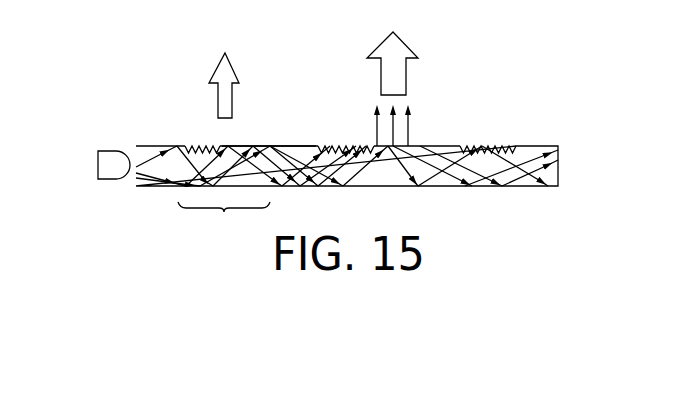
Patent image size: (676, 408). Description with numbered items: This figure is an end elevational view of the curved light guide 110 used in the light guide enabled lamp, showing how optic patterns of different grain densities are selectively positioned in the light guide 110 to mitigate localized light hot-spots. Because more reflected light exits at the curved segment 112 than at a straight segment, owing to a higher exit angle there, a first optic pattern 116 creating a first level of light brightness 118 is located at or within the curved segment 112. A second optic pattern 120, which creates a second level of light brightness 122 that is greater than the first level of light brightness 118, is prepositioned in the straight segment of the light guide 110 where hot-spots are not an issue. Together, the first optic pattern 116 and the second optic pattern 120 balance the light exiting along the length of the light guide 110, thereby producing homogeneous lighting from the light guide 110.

The light guide 110 is at (550, 173).
The curved segment 112 is at (224, 220).
The first optic pattern 116 is at (276, 136).
The first level of light brightness 118 is at (223, 70).
The second optic pattern 120 is at (421, 138).
The second level of light brightness 122 is at (386, 52).